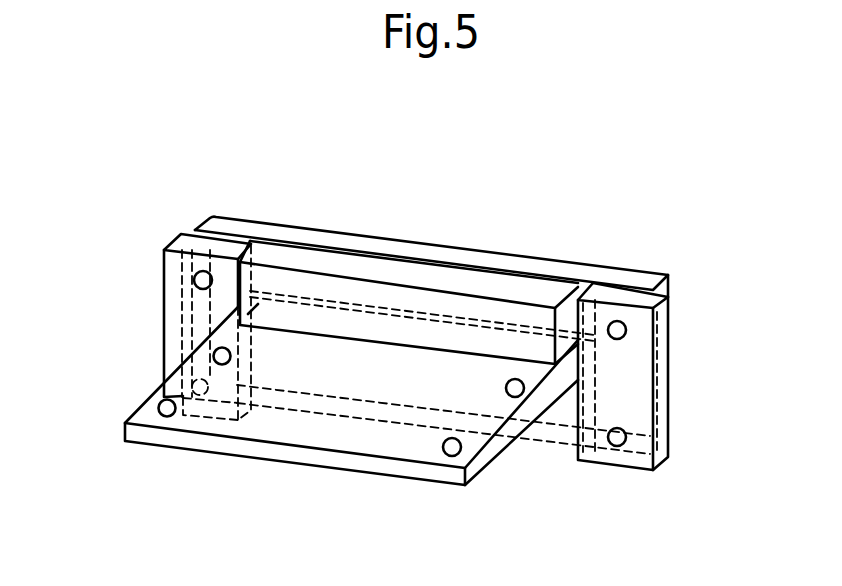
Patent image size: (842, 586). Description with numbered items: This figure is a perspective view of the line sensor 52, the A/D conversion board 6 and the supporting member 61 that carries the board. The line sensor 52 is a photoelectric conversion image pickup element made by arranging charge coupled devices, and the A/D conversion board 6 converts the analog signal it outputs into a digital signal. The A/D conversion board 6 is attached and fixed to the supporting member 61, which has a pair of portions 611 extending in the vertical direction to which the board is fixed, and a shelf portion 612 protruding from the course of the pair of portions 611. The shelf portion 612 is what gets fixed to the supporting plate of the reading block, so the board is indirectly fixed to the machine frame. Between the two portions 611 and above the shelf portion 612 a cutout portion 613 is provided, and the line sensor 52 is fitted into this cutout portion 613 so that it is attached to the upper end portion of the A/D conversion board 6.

The A/D conversion board 6 is at (309, 229).
The supporting member 61 is at (168, 238).
The portions 611 is at (164, 323).
The shelf portion 612 is at (305, 438).
The cutout portion 613 is at (490, 290).
The line sensor 52 is at (402, 275).